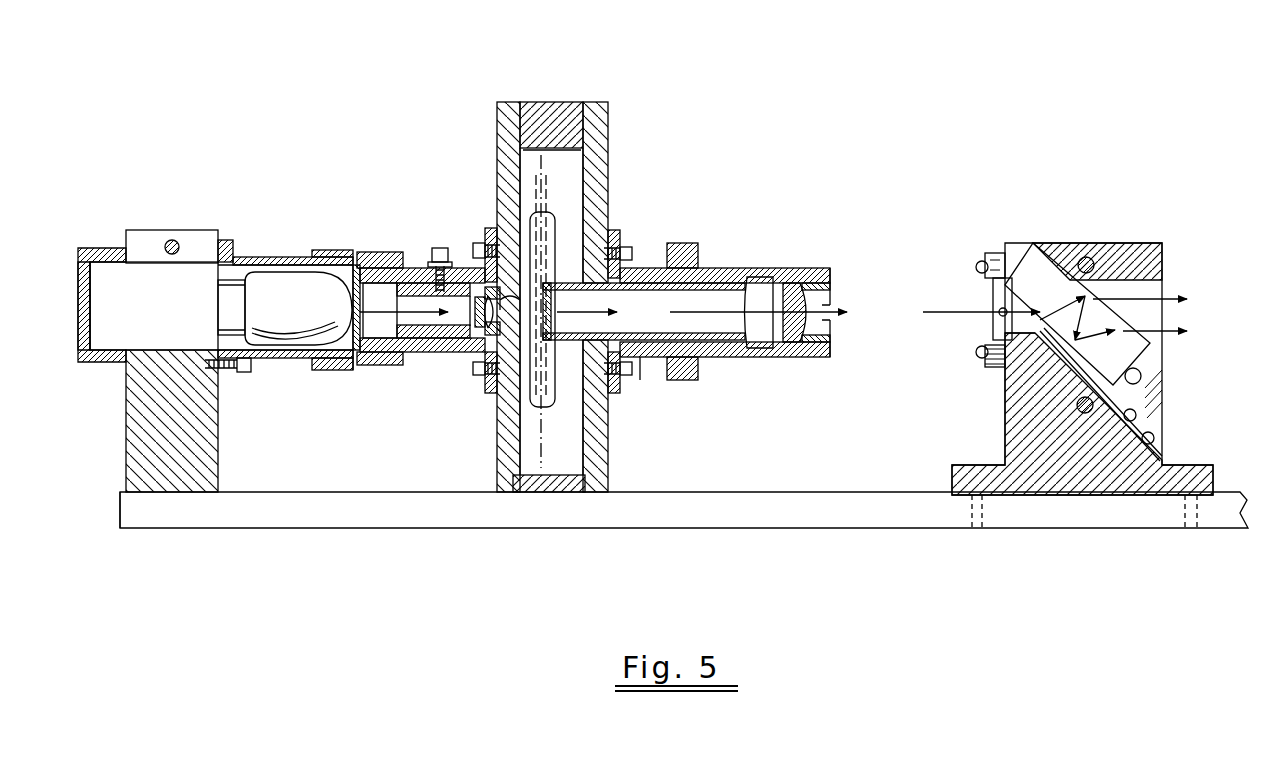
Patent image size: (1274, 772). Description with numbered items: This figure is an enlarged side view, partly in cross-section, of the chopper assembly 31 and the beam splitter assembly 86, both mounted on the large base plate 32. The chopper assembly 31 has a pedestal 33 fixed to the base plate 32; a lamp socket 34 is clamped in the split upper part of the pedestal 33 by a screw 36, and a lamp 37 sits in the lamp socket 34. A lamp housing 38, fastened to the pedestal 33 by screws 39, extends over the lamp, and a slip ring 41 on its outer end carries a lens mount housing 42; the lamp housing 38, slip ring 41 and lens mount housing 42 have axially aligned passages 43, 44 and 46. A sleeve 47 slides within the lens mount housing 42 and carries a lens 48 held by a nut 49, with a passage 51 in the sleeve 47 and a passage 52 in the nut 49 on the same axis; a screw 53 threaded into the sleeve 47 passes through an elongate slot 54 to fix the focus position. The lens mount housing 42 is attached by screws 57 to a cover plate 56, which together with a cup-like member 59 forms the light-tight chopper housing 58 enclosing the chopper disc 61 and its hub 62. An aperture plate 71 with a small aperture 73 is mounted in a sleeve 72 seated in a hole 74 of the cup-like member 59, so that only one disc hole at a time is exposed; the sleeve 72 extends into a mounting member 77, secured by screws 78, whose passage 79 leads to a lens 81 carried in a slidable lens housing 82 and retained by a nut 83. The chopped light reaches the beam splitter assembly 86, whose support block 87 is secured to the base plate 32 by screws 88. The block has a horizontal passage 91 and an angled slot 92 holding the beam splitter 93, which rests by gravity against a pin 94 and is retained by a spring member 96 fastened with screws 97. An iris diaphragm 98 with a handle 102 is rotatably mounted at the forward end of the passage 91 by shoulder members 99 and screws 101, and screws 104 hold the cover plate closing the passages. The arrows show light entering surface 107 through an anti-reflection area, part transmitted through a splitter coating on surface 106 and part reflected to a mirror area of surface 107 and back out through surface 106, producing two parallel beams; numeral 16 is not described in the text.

The shaft 16 is at (521, 294).
The chopper assembly 31 is at (328, 128).
The base plate 32 is at (712, 526).
The pedestal 33 is at (195, 440).
The lamp socket 34 is at (130, 325).
The screw 36 is at (175, 240).
The lamp 37 is at (352, 312).
The lamp housing 38 is at (280, 257).
The screws 39 is at (250, 368).
The slip ring 41 is at (362, 362).
The lens mount housing 42 is at (415, 352).
The passage 43 is at (293, 350).
The passage 44 is at (363, 338).
The passage 46 is at (382, 252).
The sleeve 47 is at (441, 338).
The lens 48 is at (475, 338).
The nut 49 is at (490, 340).
The passage 51 is at (470, 314).
The passage 52 is at (498, 308).
The screw 53 is at (447, 248).
The elongate slot 54 is at (434, 262).
The cover plate 56 is at (496, 180).
The screws 57 is at (478, 243).
The chopper housing 58 is at (549, 92).
The cup-like member 59 is at (596, 128).
The chopper disc 61 is at (545, 176).
The hub 62 is at (556, 402).
The aperture plate 71 is at (560, 322).
The sleeve 72 is at (640, 358).
The aperture 73 is at (562, 309).
The hole 74 is at (606, 340).
The mounting member 77 is at (650, 268).
The screws 78 is at (626, 247).
The passage 79 is at (660, 341).
The lens 81 is at (792, 284).
The lens housing 82 is at (740, 268).
The nut 83 is at (830, 346).
The beam splitter assembly 86 is at (1104, 188).
The support block 87 is at (1040, 445).
The screws 88 is at (972, 520).
The passage 91 is at (1165, 272).
The slot 92 is at (1035, 385).
The beam splitter 93 is at (1141, 378).
The pin 94 is at (1160, 388).
The spring member 96 is at (1122, 384).
The screws 97 is at (1155, 436).
The iris diaphragm 98 is at (993, 300).
The shoulder members 99 is at (995, 250).
The screws 101 is at (977, 266).
The handle 102 is at (1000, 315).
The screws 104 is at (1086, 257).
The surface 106 is at (1120, 310).
The surface 107 is at (1050, 326).